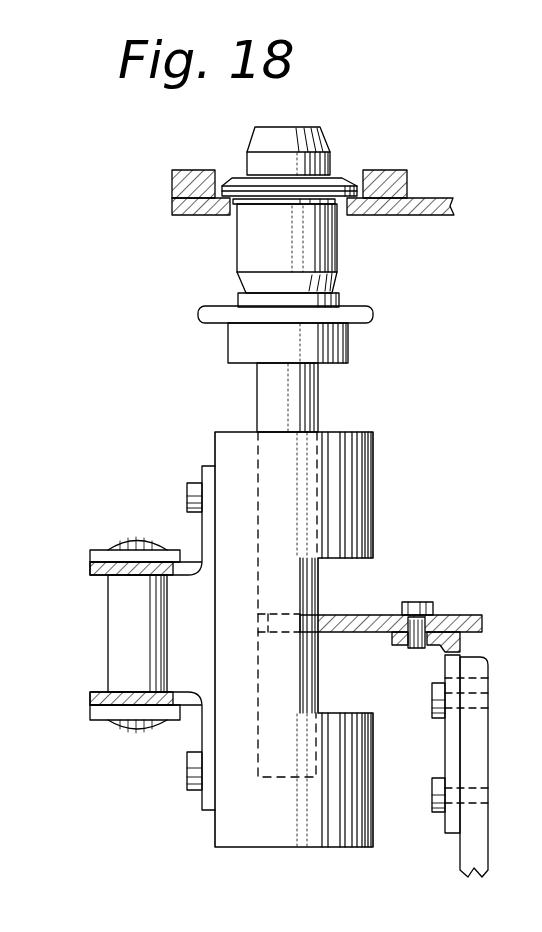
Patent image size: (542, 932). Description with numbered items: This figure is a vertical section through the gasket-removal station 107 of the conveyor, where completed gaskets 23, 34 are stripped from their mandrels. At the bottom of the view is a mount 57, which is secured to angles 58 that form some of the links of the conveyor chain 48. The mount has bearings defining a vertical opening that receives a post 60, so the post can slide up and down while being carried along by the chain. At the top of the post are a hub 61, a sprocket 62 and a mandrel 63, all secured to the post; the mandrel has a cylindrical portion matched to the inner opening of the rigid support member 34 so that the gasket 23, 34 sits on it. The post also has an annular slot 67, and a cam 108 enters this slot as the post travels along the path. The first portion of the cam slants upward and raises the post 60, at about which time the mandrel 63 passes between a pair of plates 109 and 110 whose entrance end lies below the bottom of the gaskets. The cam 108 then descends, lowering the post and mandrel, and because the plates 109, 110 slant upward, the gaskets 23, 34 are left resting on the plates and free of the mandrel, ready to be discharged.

The support member 34 is at (265, 186).
The gasket 23 is at (335, 182).
The plate 109 is at (222, 217).
The plate 110 is at (360, 217).
The mandrel 63 is at (289, 245).
The sprocket 62 is at (358, 315).
The hub 61 is at (347, 350).
The post 60 is at (305, 402).
The mount 57 is at (373, 515).
The annular slot 67 is at (303, 615).
The station 107 is at (193, 462).
The angles 58 is at (203, 532).
The chain 48 is at (108, 630).
The cam 108 is at (350, 628).